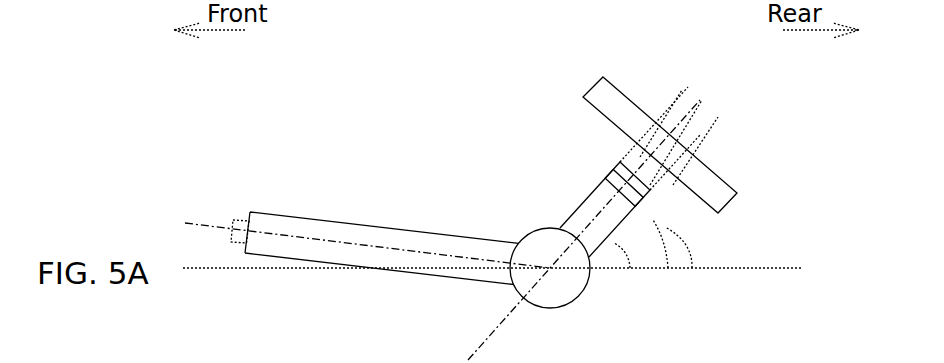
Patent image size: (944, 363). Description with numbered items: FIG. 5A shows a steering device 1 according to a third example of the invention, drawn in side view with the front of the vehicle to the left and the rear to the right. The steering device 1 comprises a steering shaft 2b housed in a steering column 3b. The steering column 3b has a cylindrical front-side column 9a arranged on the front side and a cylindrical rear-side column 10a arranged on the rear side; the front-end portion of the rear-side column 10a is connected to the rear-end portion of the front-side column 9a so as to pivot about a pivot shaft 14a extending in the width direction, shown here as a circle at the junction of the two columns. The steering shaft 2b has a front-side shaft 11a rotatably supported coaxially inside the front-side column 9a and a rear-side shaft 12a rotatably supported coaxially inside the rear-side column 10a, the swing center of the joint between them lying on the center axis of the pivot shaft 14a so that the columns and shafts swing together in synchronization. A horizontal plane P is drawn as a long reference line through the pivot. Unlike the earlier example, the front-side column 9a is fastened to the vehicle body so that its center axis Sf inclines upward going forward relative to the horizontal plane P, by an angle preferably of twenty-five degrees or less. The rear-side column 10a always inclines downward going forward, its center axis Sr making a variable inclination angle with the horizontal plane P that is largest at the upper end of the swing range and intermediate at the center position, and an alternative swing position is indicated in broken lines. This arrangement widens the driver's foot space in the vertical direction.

The steering member 1 is at (661, 122).
The steering shaft 2b is at (700, 147).
The steering column 3b is at (445, 247).
The front-side column 9a is at (361, 239).
The rear-side column 10a is at (577, 207).
The front-side shaft 11a is at (246, 211).
The rear-side shaft 12a is at (628, 160).
The pivot shaft 14a is at (560, 270).
The horizontal plane P is at (793, 268).
The center axis of the front-side column Sf is at (378, 249).
The center axis of the rear-side column Sr is at (599, 168).